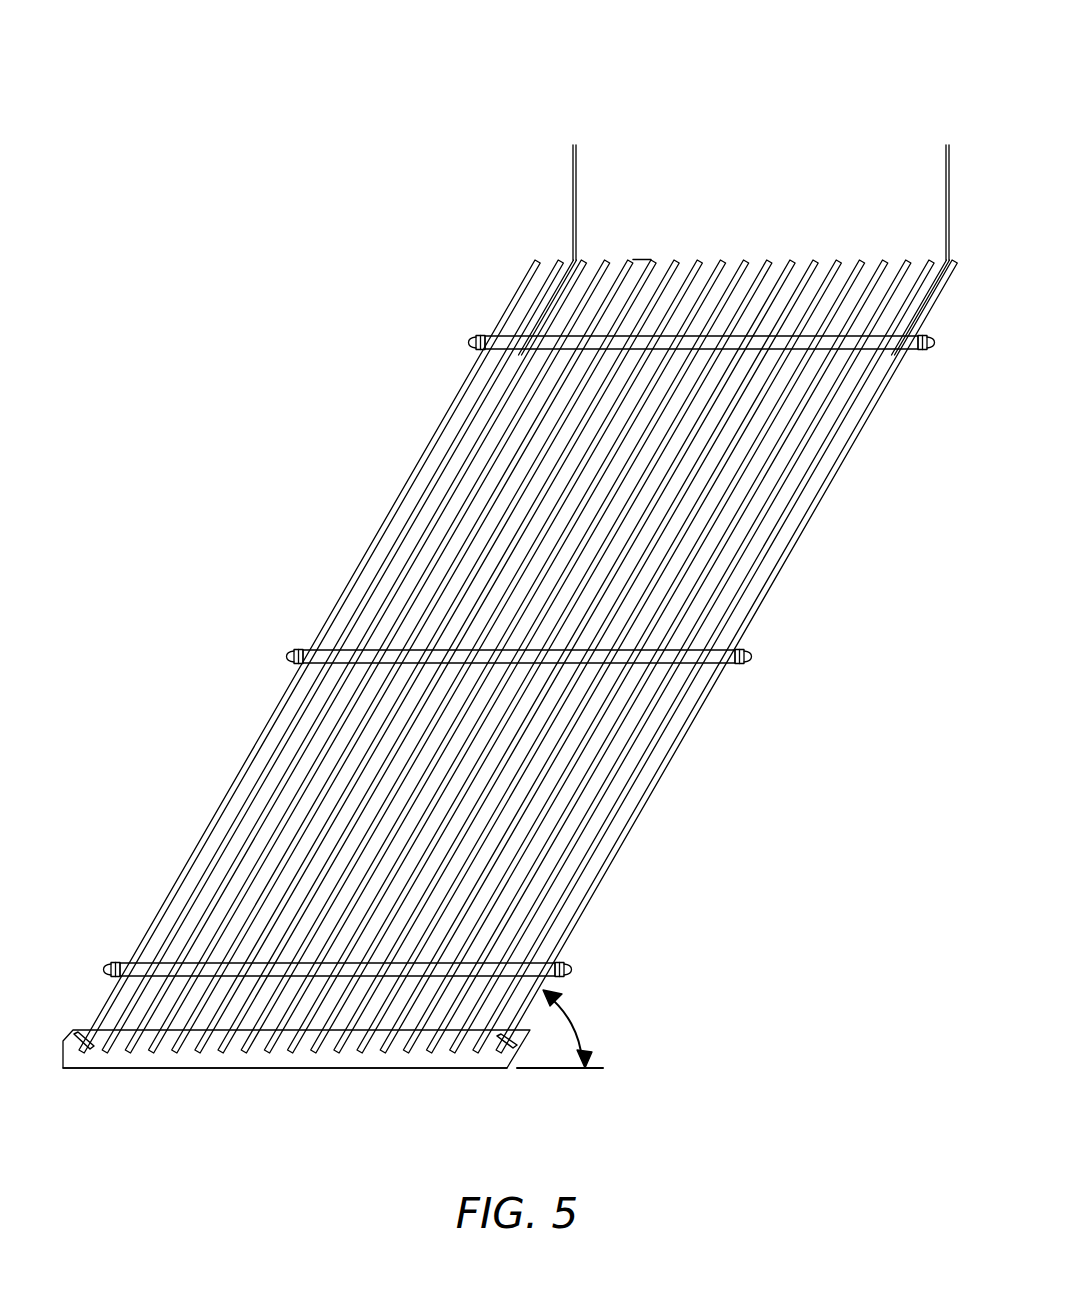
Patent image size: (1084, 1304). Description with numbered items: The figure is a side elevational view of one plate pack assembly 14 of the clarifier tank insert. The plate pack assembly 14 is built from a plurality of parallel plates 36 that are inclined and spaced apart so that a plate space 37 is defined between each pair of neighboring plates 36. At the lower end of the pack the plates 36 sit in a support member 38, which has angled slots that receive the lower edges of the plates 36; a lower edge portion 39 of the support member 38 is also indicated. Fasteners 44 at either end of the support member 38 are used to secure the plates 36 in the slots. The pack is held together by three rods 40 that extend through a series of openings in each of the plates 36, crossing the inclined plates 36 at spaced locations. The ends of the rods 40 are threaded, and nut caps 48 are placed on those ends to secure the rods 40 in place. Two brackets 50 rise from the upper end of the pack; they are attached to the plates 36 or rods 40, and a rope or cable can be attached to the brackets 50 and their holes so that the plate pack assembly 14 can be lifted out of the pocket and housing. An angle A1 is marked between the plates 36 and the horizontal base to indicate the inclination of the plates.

The plate pack assembly 14 is at (822, 108).
The plates 36 is at (518, 657).
The plate space 37 is at (745, 520).
The support member 38 is at (145, 1069).
The front edge of base plate 39 is at (420, 1069).
The rods 40 is at (739, 341).
The fasteners 44 is at (90, 1040).
The nut caps 48 is at (468, 342).
The brackets 50 is at (573, 152).
The tilt angle A1 is at (572, 1022).